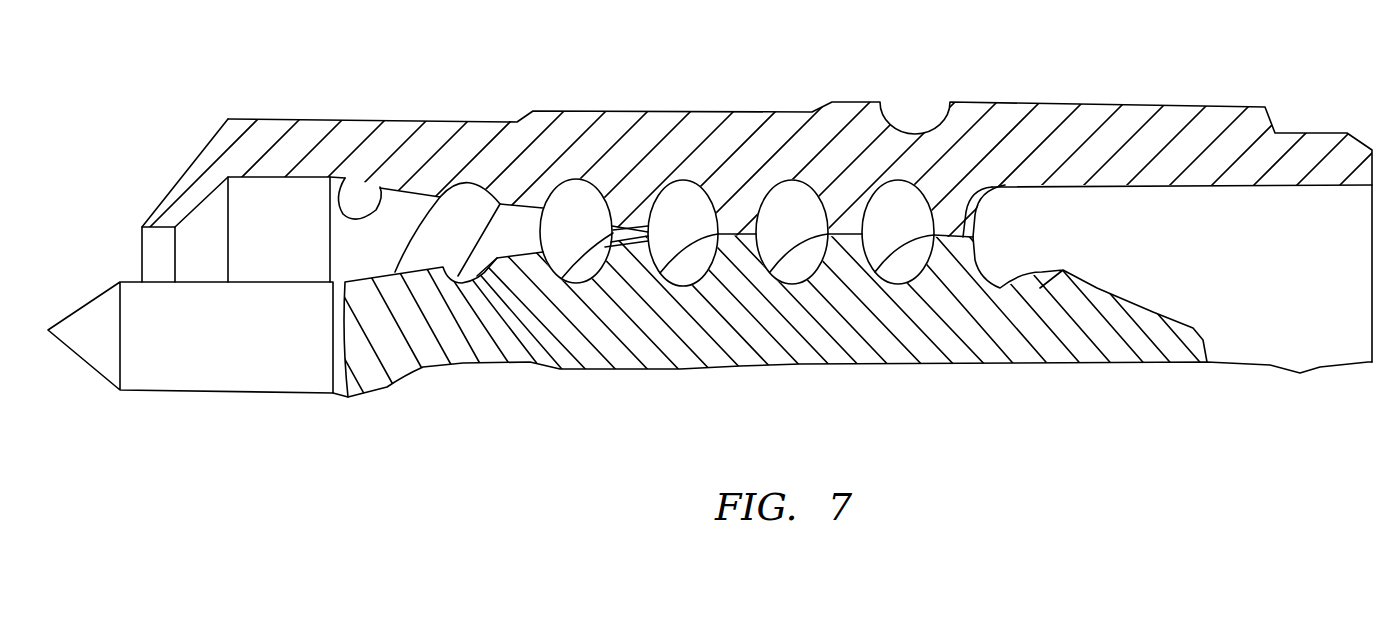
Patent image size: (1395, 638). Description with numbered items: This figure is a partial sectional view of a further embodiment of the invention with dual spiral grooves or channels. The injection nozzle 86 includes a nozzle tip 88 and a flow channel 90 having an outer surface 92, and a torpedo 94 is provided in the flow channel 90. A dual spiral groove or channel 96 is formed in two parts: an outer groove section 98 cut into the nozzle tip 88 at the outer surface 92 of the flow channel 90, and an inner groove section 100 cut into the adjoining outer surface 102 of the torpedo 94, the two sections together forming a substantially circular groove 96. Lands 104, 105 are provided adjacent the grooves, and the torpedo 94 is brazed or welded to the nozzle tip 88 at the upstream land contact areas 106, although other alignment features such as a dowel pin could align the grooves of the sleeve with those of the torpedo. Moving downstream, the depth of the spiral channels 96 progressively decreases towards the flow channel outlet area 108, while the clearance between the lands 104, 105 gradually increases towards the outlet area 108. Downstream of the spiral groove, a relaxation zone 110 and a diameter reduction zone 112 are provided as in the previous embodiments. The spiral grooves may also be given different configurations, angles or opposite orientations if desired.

The injection nozzle 86 is at (1108, 74).
The nozzle tip 88 is at (446, 130).
The flow channel 90 is at (1252, 288).
The outer surface of flow channel 92 is at (1237, 185).
The torpedo 94 is at (973, 345).
The dual spiral groove 96 is at (792, 199).
The outer groove section 98 is at (690, 197).
The inner groove section 100 is at (692, 268).
The outer surface of torpedo 102 is at (1120, 293).
The land 104 is at (628, 218).
The land 105 is at (600, 265).
The upstream land contact area 106 is at (740, 236).
The flow channel outlet area 108 is at (212, 217).
The relaxation zone 110 is at (294, 195).
The diameter reduction zone 112 is at (155, 257).